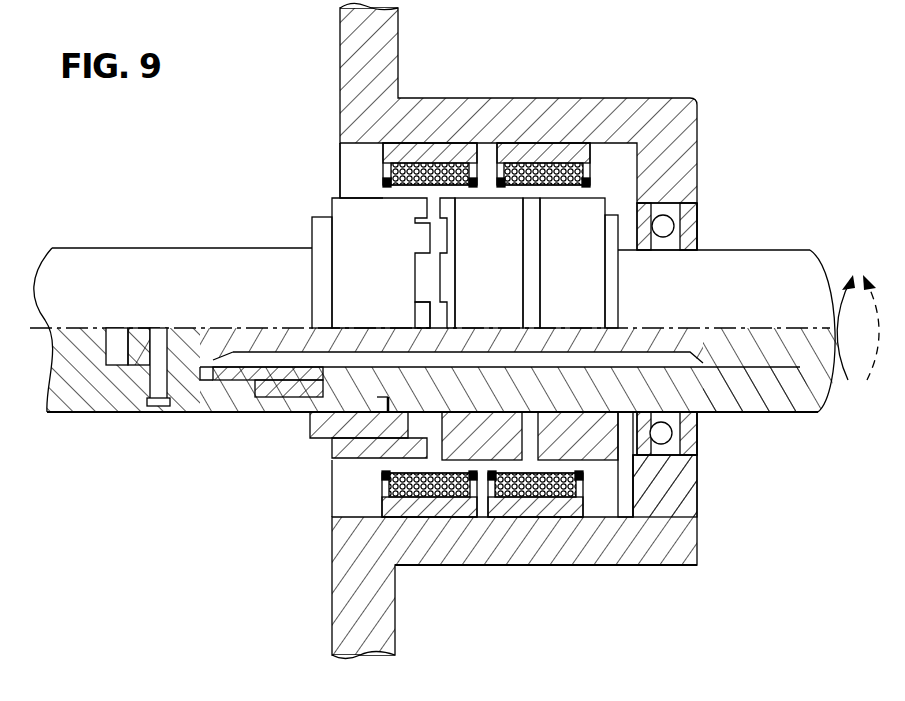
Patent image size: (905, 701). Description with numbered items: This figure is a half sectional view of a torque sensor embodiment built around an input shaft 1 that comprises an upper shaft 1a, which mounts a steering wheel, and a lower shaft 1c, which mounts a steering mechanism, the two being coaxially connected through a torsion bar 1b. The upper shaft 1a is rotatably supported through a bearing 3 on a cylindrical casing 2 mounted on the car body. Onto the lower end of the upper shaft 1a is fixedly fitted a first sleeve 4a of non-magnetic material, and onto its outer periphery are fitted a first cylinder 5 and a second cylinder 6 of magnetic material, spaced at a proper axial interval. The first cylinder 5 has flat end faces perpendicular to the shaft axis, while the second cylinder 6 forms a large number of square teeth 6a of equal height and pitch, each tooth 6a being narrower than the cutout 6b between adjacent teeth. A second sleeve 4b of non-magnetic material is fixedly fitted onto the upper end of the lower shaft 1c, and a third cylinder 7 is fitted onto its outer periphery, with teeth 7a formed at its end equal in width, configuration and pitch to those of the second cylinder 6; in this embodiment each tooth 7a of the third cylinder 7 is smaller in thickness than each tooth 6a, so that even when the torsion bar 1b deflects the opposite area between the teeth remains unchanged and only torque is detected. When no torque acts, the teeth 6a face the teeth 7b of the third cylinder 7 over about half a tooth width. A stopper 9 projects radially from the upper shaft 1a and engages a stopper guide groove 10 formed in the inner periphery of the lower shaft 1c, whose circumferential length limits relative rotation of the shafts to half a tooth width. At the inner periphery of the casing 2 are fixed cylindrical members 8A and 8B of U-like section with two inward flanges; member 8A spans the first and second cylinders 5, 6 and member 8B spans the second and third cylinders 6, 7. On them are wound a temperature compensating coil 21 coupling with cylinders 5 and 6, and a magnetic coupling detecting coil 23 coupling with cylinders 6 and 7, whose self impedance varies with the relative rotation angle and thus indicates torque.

The input shaft 1 is at (180, 438).
The upper shaft 1a is at (797, 265).
The torsion bar 1b is at (703, 413).
The lower shaft 1c is at (95, 262).
The casing 2 is at (392, 32).
The bearing 3 is at (703, 232).
The first sleeve 4a is at (633, 468).
The second sleeve 4b is at (300, 438).
The first cylinder 5 is at (583, 228).
The second cylinder 6 is at (680, 130).
The teeth 6a is at (505, 235).
The cutout 6b is at (452, 268).
The third cylinder 7 is at (357, 235).
The teeth 7a is at (420, 310).
The teeth 7b is at (400, 205).
The cylindrical member 8A is at (620, 98).
The cylindrical member 8B is at (430, 150).
The stopper 9 is at (268, 402).
The stopper guide groove 10 is at (345, 393).
The temperature compensating coil 21 is at (583, 143).
The magnetic coupling detecting coil 23 is at (340, 188).